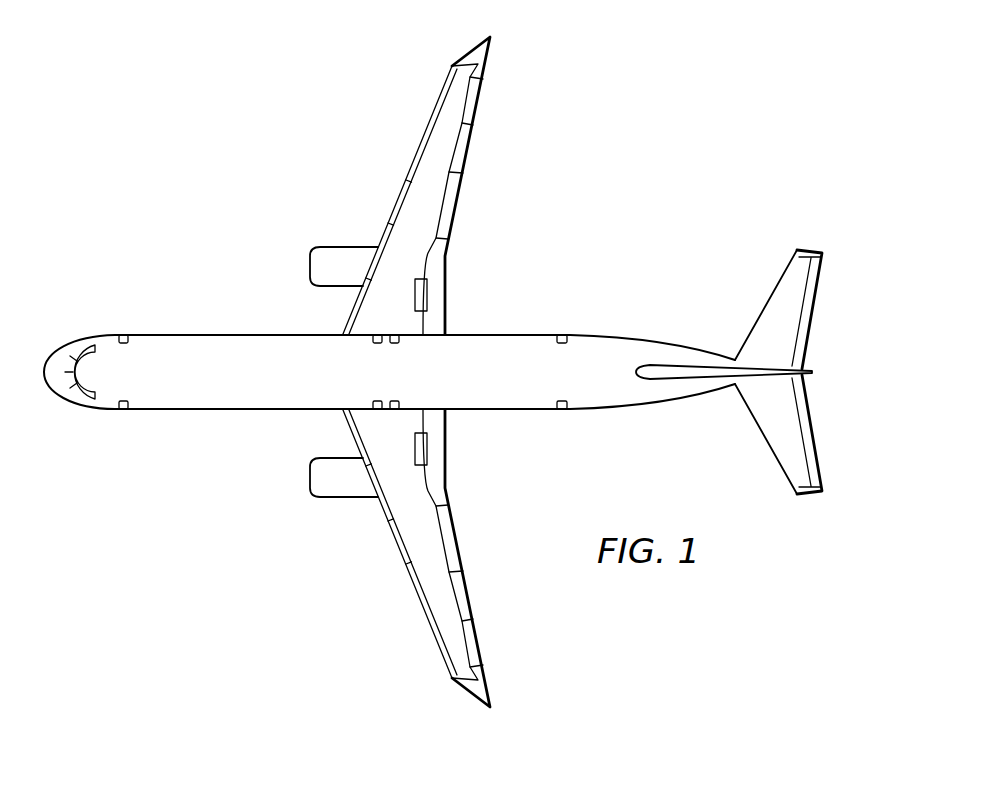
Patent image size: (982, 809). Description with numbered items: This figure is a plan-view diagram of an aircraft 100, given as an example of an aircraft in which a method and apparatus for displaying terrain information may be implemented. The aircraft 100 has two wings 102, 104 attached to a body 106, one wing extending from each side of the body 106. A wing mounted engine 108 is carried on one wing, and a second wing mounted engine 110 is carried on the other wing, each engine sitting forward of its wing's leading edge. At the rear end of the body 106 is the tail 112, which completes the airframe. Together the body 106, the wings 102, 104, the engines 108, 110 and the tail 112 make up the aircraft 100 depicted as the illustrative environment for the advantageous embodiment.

The aircraft 100 is at (299, 156).
The wing 102 is at (399, 195).
The wing 104 is at (398, 548).
The body 106 is at (220, 334).
The wing mounted engine 108 is at (310, 258).
The wing mounted engine 110 is at (310, 486).
The tail 112 is at (811, 325).